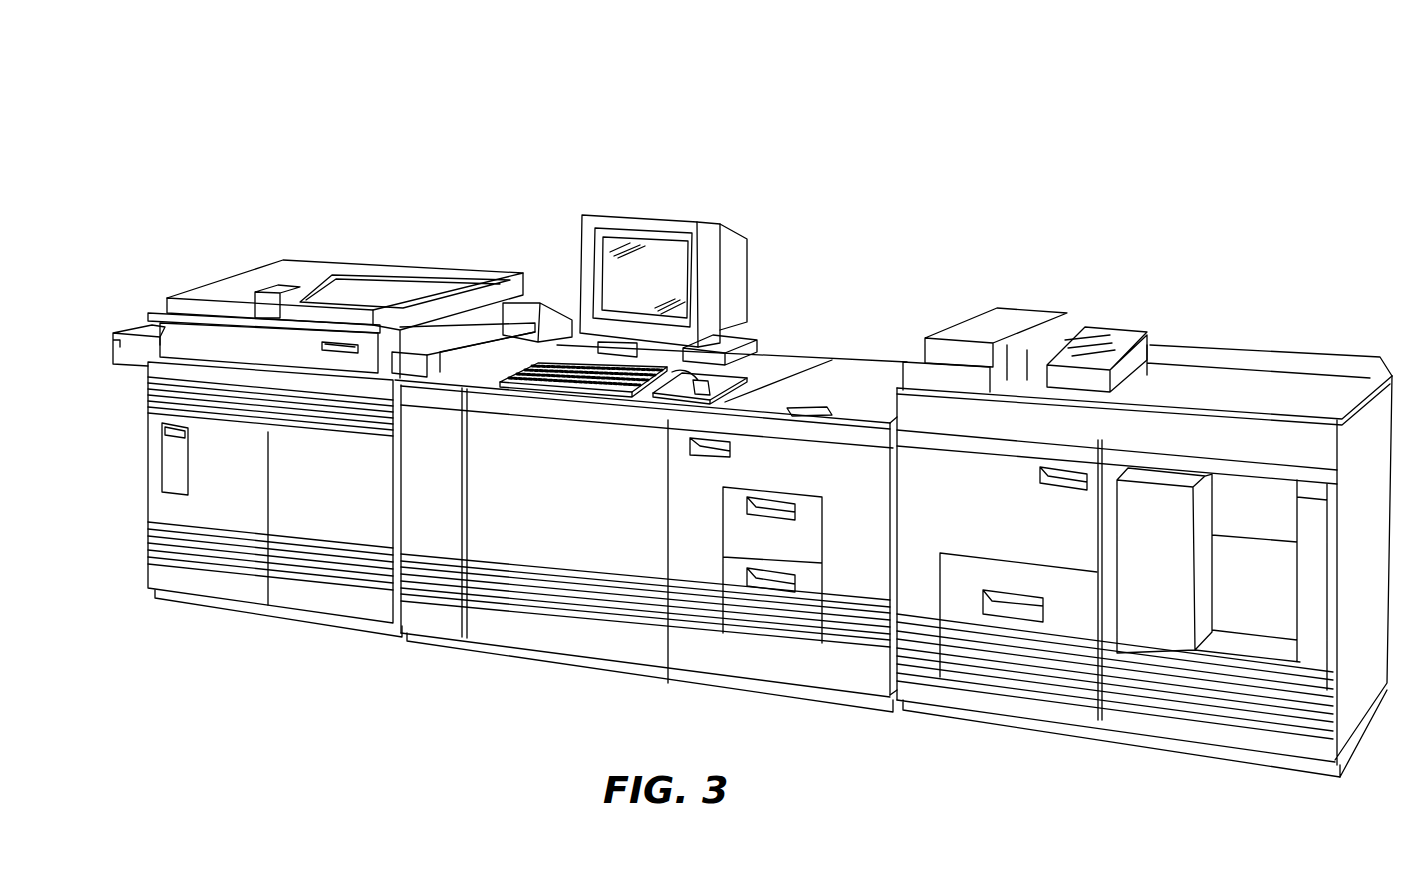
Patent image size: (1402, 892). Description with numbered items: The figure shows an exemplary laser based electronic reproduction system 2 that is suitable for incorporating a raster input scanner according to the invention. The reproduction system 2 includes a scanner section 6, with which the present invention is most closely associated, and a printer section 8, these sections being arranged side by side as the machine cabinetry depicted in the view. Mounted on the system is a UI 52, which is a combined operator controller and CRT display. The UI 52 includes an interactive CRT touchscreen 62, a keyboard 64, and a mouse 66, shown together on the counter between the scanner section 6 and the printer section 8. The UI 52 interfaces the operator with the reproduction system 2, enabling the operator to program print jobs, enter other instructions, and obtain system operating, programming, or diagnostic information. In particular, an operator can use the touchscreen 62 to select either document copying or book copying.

The reproduction system 2 is at (836, 128).
The scanner section 6 is at (385, 247).
The printer section 8 is at (861, 285).
The UI 52 is at (673, 212).
The interactive CRT touchscreen 62 is at (612, 285).
The keyboard 64 is at (574, 392).
The mouse 66 is at (662, 400).